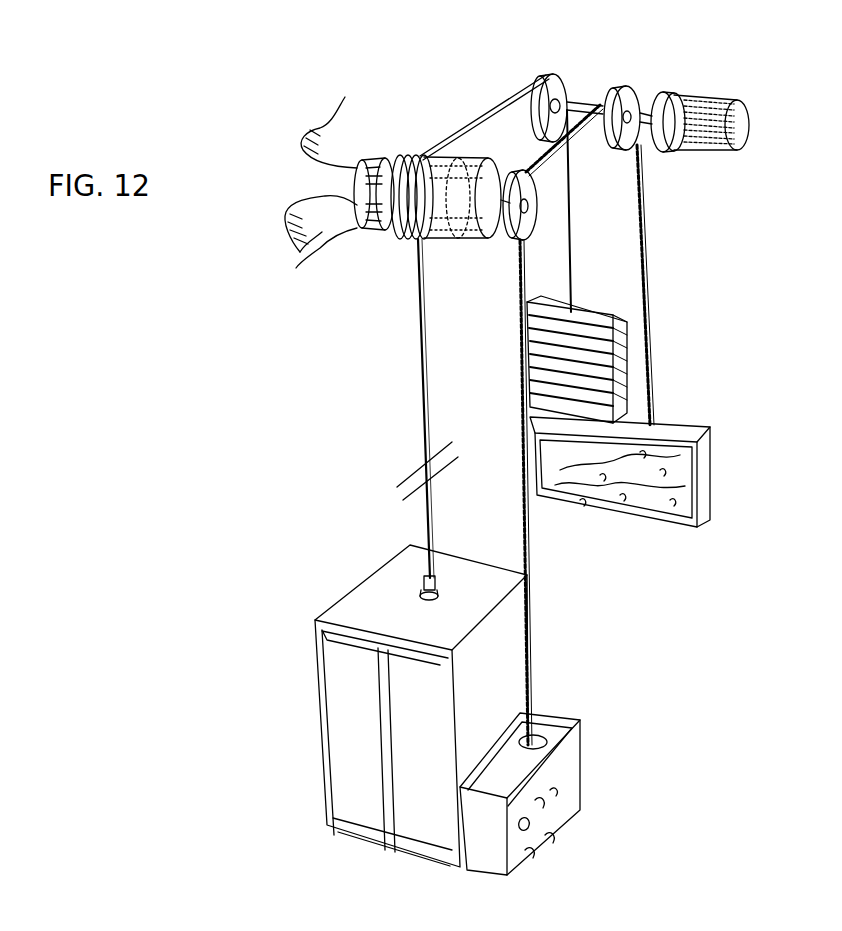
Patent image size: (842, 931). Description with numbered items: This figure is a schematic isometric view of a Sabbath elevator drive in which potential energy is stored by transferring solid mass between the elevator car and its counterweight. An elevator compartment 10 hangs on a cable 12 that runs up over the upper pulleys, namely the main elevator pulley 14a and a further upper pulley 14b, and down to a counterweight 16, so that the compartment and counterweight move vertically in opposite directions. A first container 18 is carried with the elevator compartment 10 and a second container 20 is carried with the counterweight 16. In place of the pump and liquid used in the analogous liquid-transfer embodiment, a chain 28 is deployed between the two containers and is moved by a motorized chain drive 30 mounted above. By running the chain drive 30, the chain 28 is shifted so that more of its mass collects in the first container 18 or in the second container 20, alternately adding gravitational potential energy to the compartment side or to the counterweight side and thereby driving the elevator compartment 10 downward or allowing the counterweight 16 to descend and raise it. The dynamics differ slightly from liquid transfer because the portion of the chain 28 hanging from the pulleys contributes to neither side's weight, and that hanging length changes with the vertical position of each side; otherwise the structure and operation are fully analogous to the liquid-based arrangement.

The elevator compartment 10 is at (313, 662).
The cable 12 is at (418, 415).
The main elevator pulley 14a is at (408, 158).
The upper pulley 14b is at (553, 95).
The counterweight 16 is at (617, 350).
The first container 18 is at (578, 762).
The second container 20 is at (702, 467).
The chain 28 is at (520, 538).
The motorized chain drive 30 is at (700, 117).